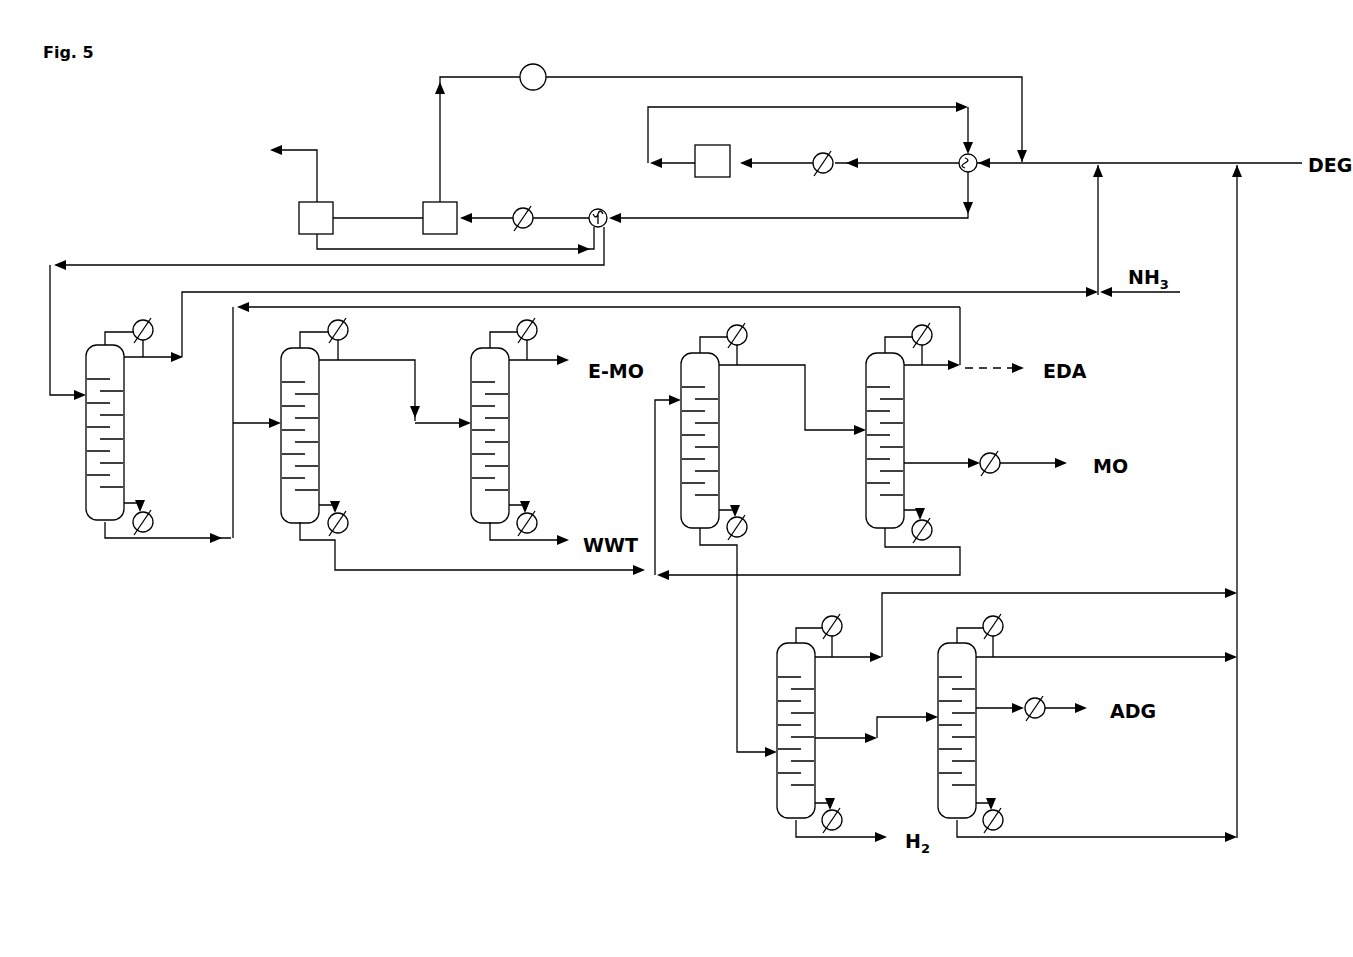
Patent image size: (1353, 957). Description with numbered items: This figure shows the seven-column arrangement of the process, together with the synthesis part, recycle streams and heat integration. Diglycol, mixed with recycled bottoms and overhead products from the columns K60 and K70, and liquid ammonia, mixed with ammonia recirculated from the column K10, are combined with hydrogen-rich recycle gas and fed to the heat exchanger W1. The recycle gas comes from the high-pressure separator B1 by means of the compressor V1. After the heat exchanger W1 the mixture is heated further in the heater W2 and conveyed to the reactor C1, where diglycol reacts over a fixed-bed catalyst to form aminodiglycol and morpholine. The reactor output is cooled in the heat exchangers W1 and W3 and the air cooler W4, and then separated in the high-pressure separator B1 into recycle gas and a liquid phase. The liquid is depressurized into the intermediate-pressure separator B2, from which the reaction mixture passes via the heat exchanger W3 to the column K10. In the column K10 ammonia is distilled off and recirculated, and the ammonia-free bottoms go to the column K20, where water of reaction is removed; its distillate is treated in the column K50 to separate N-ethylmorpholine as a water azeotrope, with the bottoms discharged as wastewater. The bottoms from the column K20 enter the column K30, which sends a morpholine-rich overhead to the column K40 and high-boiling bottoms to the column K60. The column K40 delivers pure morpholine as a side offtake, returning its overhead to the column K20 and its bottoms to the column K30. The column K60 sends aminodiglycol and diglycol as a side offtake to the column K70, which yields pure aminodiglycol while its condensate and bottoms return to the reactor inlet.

The compressor V1 is at (535, 92).
The high-pressure separator B1 is at (423, 203).
The intermediate-pressure separator B2 is at (299, 189).
The heat exchanger W1 is at (996, 176).
The heater W2 is at (820, 175).
The heat exchanger W3 is at (600, 202).
The air cooler W4 is at (524, 204).
The reactor C1 is at (712, 172).
The column K10 is at (158, 430).
The column K20 is at (439, 446).
The column K30 is at (760, 540).
The pure morpholine distillation column K40 is at (862, 443).
The column K50 is at (514, 431).
The column K60 is at (857, 728).
The column K70 is at (1087, 728).